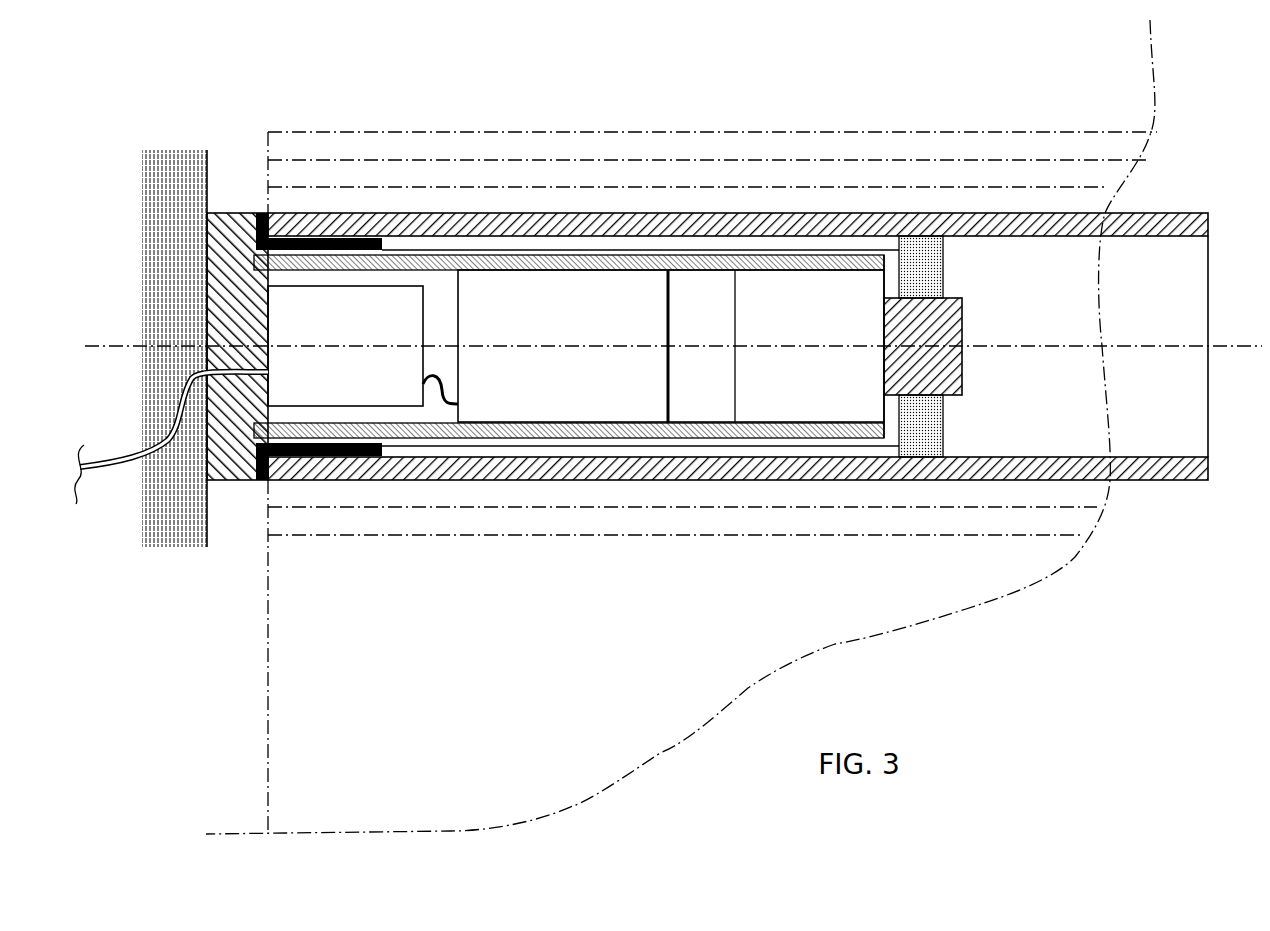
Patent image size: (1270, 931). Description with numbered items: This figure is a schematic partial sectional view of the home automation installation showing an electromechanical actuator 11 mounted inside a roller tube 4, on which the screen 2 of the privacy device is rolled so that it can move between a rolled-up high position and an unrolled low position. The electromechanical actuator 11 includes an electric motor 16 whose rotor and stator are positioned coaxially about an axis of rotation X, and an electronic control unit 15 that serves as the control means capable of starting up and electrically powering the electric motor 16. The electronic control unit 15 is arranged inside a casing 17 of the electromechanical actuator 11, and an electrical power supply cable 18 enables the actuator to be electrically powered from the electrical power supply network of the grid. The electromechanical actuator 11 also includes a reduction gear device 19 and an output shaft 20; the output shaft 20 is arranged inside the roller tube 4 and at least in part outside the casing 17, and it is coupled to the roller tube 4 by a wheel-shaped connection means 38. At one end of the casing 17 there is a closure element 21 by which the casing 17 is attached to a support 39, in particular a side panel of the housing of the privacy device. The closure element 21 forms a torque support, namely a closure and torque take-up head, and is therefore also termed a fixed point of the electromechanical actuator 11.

The screen 2 is at (1017, 143).
The roller tube 4 is at (1178, 213).
The electromechanical actuator 11 is at (650, 447).
The electronic control unit 15 is at (383, 300).
The electric motor 16 is at (595, 300).
The casing 17 is at (525, 256).
The electrical power supply cable 18 is at (115, 470).
The reduction gear device 19 is at (820, 300).
The output shaft 20 is at (928, 307).
The closure element 21 is at (252, 213).
The connection means 38 is at (927, 430).
The support 39 is at (173, 187).
The axis of rotation X is at (558, 345).